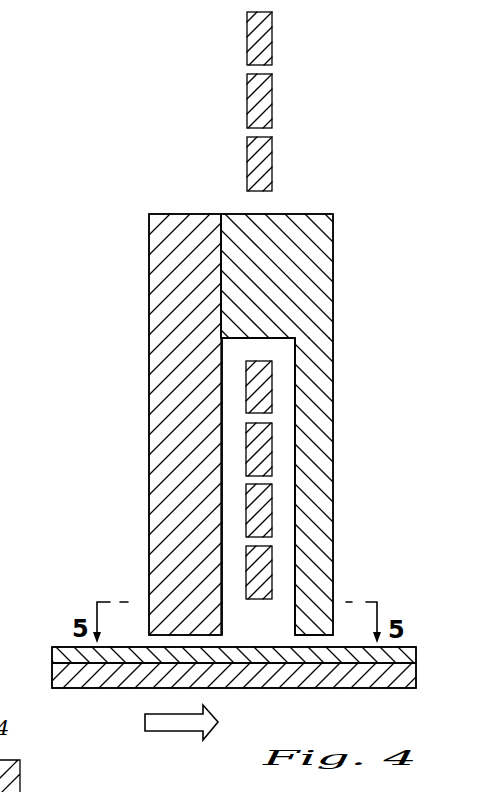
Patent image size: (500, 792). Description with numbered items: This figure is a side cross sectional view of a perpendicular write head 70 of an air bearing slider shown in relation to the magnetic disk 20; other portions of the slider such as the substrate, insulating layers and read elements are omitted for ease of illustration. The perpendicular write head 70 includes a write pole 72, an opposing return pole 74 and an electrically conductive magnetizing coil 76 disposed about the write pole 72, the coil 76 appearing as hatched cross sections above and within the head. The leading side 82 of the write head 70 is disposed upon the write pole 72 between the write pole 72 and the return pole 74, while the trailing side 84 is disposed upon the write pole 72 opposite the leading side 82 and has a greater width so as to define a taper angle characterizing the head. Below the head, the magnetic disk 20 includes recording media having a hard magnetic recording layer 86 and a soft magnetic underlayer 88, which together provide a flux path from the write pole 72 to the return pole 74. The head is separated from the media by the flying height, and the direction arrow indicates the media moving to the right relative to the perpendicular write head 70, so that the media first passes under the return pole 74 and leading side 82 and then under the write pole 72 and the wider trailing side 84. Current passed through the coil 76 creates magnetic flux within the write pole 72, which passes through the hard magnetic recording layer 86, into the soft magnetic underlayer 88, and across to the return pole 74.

The perpendicular write head 70 is at (128, 160).
The write pole 72 is at (333, 293).
The return pole 74 is at (148, 299).
The magnetizing coil 76 is at (248, 95).
The leading side 82 is at (293, 627).
The trailing side 84 is at (335, 623).
The hard magnetic recording layer 86 is at (416, 657).
The soft magnetic underlayer 88 is at (416, 677).
The magnetic disk 20 is at (55, 675).